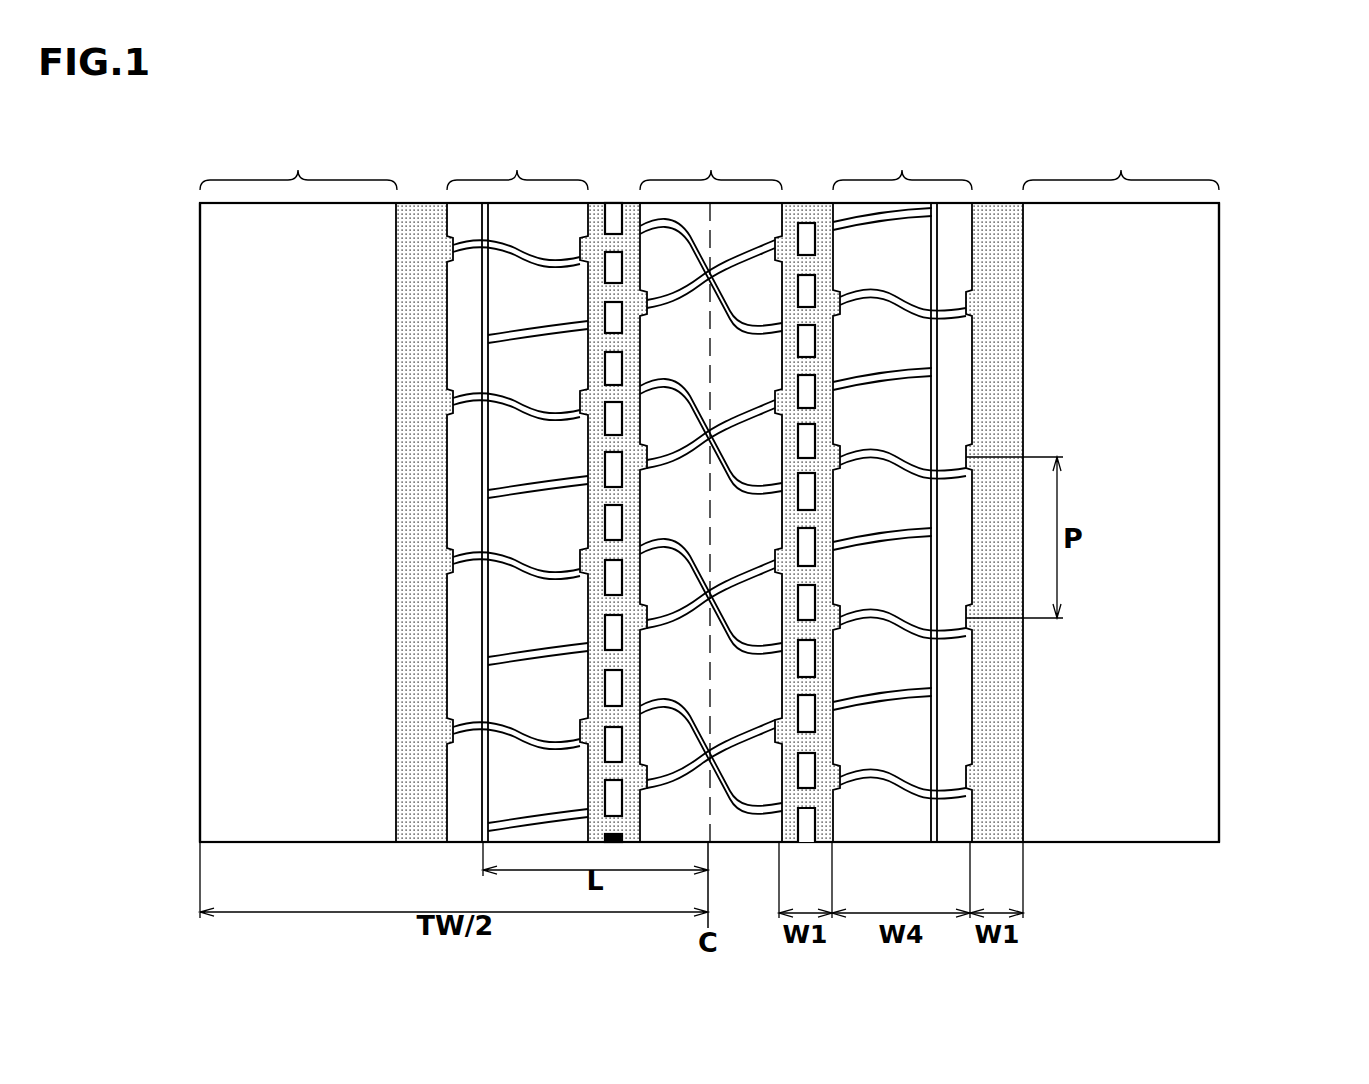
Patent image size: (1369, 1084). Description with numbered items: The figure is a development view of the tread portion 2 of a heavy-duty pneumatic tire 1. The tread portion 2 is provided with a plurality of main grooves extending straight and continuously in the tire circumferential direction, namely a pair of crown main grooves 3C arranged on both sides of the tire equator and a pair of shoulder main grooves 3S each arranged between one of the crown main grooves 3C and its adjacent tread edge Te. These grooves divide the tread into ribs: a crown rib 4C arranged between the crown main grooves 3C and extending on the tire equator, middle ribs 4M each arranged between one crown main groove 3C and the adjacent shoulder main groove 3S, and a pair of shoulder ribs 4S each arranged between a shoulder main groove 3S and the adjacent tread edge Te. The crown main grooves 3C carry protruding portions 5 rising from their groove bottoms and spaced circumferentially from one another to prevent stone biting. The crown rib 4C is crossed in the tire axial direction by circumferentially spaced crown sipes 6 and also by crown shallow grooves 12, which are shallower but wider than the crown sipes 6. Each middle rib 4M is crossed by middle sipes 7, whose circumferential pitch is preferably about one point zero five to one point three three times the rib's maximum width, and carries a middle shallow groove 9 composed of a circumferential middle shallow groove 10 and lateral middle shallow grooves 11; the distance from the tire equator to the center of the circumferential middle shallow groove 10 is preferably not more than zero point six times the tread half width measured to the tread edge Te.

The heavy-duty pneumatic tire 1 is at (1254, 148).
The tread portion 2 is at (784, 465).
The shoulder main groove 3S is at (427, 220).
The crown main groove 3C is at (630, 215).
The shoulder rib 4S is at (709, 162).
The middle rib 4M is at (709, 488).
The crown rib 4C is at (711, 488).
The protruding portion 5 is at (805, 820).
The crown sipe 6 is at (661, 303).
The middle sipe 7 is at (893, 303).
The middle shallow groove 9 is at (1095, 522).
The circumferential middle shallow groove 10 is at (935, 433).
The lateral middle shallow groove 11 is at (895, 375).
The crown shallow groove 12 is at (752, 338).
The tread edge Te is at (200, 240).